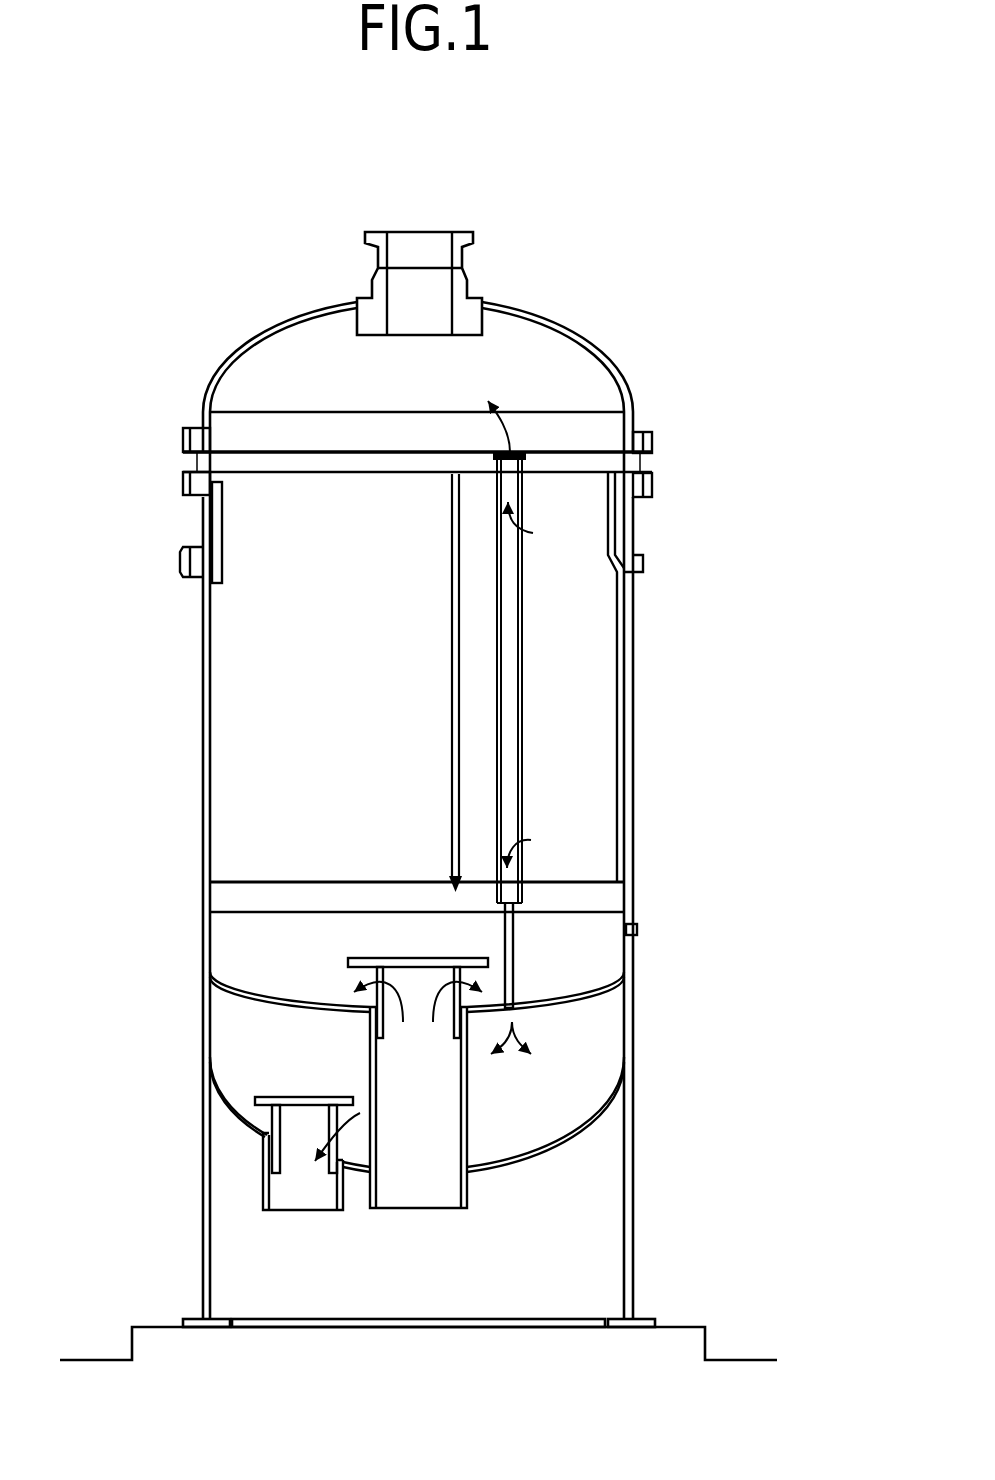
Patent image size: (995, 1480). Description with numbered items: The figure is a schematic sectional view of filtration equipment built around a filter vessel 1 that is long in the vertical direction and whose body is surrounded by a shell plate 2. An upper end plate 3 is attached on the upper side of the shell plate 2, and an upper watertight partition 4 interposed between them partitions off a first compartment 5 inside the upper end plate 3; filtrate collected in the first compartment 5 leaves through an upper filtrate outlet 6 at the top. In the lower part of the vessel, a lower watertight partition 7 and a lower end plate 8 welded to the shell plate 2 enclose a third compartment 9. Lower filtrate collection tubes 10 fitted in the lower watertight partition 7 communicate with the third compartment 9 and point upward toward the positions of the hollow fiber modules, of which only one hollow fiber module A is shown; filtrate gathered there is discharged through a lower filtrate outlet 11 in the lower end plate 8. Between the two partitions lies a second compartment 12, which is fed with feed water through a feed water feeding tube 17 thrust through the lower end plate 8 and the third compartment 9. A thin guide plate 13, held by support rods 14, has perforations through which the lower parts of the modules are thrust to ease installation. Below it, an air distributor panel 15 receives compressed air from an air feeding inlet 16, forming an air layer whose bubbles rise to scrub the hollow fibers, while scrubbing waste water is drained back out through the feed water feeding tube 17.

The filter vessel 1 is at (644, 697).
The shell plate 2 is at (203, 738).
The upper end plate 3 is at (232, 351).
The upper watertight partition 4 is at (598, 458).
The first compartment 5 is at (558, 358).
The upper filtrate outlet 6 is at (447, 289).
The lower watertight partition 7 is at (232, 998).
The lower end plate 8 is at (548, 1152).
The third compartment 9 is at (617, 1030).
The lower filtrate collection tube 10 is at (517, 959).
The lower filtrate outlet 11 is at (296, 1192).
The second compartment 12 is at (233, 668).
The guide plate 13 is at (303, 882).
The support rod 14 is at (452, 705).
The air distributor panel 15 is at (300, 913).
The air feeding inlet 16 is at (639, 930).
The feed water feeding tube 17 is at (403, 1192).
The hollow fiber module A is at (528, 713).